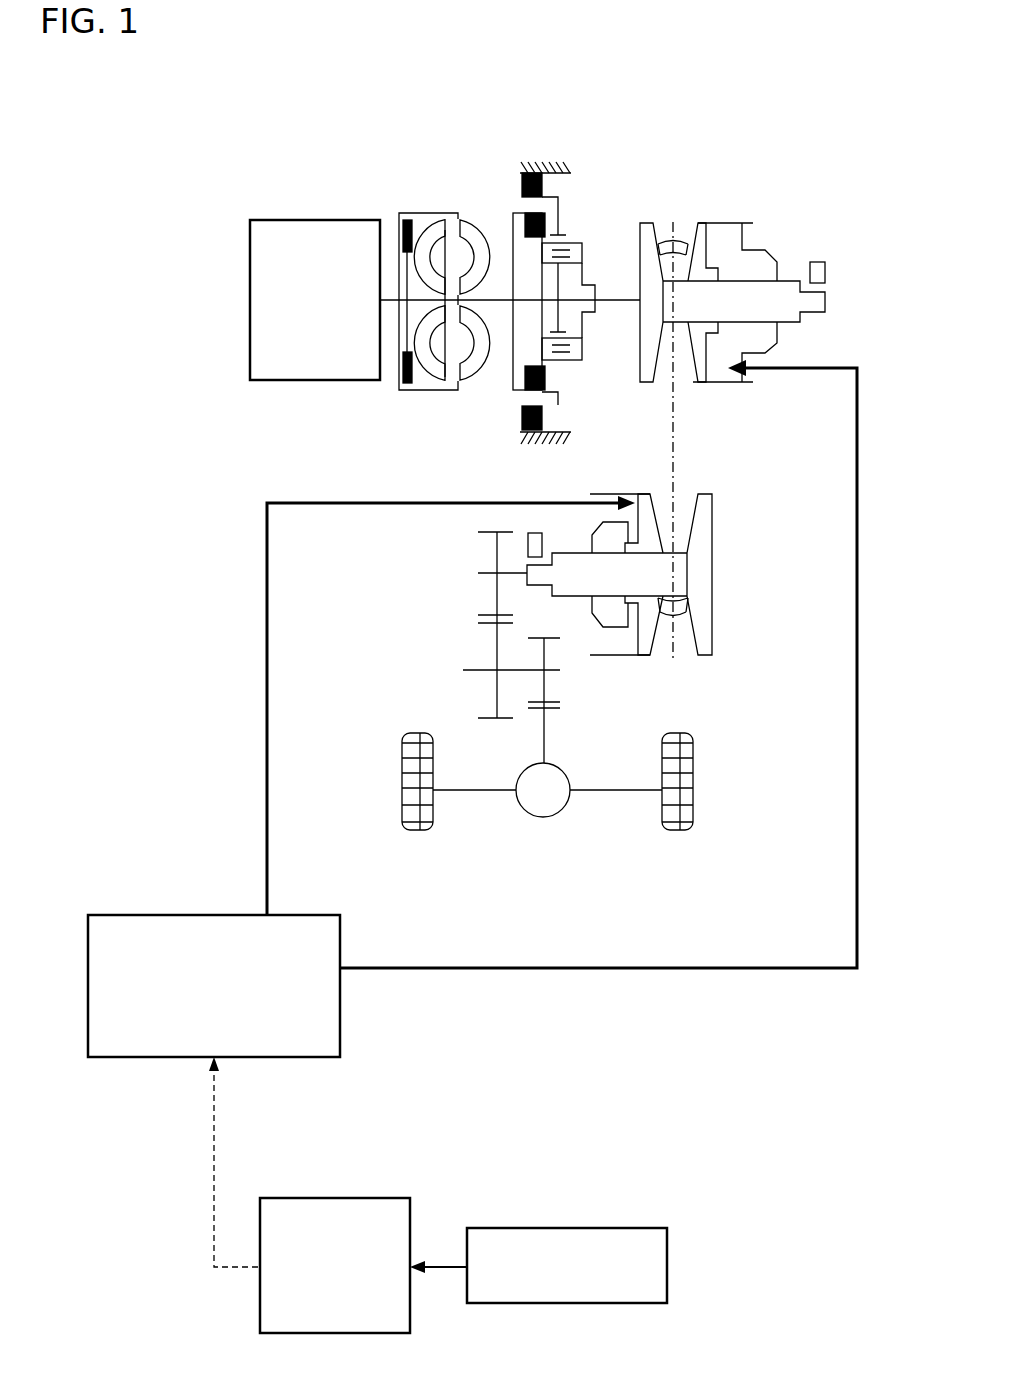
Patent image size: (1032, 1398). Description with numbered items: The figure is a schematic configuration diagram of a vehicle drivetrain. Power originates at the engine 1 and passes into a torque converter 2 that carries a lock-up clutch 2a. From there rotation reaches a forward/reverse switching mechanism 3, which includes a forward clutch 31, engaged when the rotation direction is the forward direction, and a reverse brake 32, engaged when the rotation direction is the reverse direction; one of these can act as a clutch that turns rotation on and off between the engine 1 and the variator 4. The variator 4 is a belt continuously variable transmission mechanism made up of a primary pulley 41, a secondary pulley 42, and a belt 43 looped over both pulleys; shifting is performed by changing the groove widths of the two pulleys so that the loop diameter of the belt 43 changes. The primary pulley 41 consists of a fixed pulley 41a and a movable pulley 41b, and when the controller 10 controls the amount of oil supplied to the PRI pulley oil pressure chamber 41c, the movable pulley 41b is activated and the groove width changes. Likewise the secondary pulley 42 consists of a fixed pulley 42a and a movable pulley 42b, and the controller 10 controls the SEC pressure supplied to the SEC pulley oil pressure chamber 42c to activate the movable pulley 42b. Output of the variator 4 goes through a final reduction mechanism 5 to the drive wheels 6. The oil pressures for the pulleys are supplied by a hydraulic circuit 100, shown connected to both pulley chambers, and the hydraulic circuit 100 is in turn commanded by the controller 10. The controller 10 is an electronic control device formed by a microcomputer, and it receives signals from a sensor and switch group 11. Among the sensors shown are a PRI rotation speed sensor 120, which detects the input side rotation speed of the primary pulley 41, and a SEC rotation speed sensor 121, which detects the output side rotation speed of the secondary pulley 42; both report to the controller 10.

The engine 1 is at (300, 220).
The torque converter 2 is at (447, 186).
The lock-up clutch 2a is at (405, 220).
The forward/reverse switching mechanism 3 is at (533, 148).
The forward clutch 31 is at (520, 212).
The reverse brake 32 is at (551, 171).
The variator 4 is at (670, 148).
The primary pulley 41 is at (775, 257).
The fixed pulley 41a is at (647, 222).
The movable pulley 41b is at (698, 222).
The PRI pulley oil pressure chamber 41c is at (724, 240).
The secondary pulley 42 is at (714, 625).
The fixed pulley 42a is at (714, 510).
The movable pulley 42b is at (647, 657).
The SEC pulley oil pressure chamber 42c is at (626, 628).
The belt 43 is at (679, 618).
The final reduction mechanism 5 is at (448, 635).
The drive wheels 6 is at (400, 796).
The controller 10 is at (353, 1197).
The sensor and switch group 11 is at (670, 1240).
The hydraulic circuit 100 is at (214, 914).
The PRI rotation speed sensor 120 is at (826, 271).
The SEC rotation speed sensor 121 is at (547, 533).